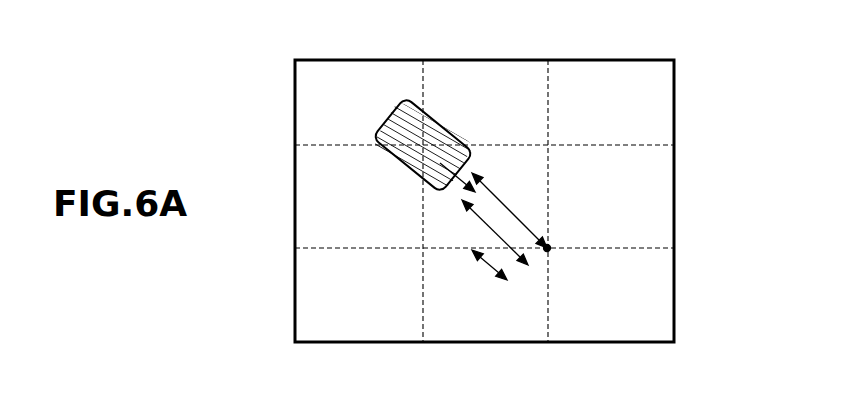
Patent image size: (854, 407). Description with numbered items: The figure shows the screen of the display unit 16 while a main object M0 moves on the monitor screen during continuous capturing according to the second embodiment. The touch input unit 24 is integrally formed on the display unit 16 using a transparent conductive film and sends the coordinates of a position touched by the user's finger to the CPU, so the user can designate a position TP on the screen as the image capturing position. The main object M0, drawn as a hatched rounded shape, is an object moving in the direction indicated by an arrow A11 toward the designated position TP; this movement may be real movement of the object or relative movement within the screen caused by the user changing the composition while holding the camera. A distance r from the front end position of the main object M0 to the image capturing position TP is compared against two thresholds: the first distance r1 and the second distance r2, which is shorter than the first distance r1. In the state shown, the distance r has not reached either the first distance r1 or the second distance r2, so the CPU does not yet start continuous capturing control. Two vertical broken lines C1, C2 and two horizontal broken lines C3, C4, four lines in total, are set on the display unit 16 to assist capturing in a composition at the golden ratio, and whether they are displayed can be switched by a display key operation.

The display unit 16 is at (534, 201).
The touch input unit 24 is at (674, 85).
The line C1 is at (423, 80).
The line C2 is at (548, 80).
The line C3 is at (312, 145).
The line C4 is at (312, 248).
The main object M0 is at (383, 117).
The arrow A11 is at (464, 179).
The distance r is at (507, 208).
The designated position TP is at (547, 248).
The first distance r1 is at (487, 223).
The second distance r2 is at (492, 259).